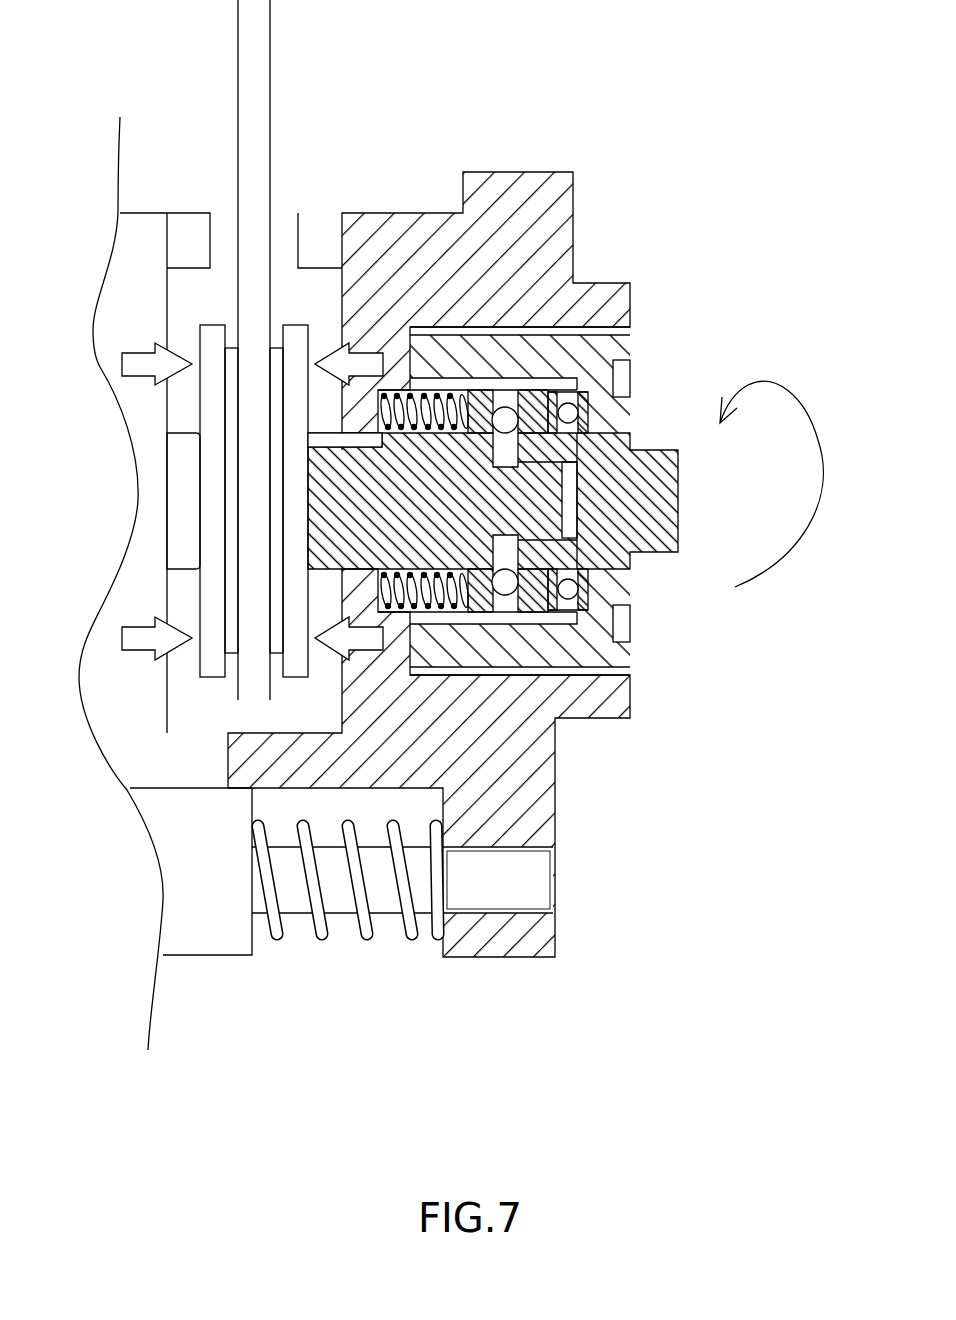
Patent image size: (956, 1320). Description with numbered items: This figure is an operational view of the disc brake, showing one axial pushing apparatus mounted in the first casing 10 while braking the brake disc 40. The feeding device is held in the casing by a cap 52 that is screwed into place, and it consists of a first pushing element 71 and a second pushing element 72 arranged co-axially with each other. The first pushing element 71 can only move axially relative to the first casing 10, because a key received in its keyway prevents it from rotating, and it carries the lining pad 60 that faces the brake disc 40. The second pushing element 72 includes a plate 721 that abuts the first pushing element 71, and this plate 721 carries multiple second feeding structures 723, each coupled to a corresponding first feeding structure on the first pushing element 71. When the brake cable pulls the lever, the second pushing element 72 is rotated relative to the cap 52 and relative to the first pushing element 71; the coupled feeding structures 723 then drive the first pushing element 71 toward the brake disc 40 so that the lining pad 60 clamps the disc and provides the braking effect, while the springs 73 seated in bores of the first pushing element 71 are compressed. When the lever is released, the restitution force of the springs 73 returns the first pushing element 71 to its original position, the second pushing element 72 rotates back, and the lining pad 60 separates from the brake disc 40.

The first casing 10 is at (478, 797).
The brake disc 40 is at (257, 78).
The cap 52 is at (597, 367).
The lining pad 60 is at (296, 348).
The first pushing element 71 is at (632, 570).
The second pushing element 72 is at (653, 492).
The spring 73 is at (478, 673).
The plate 721 is at (530, 598).
The second feeding structure 723 is at (506, 418).